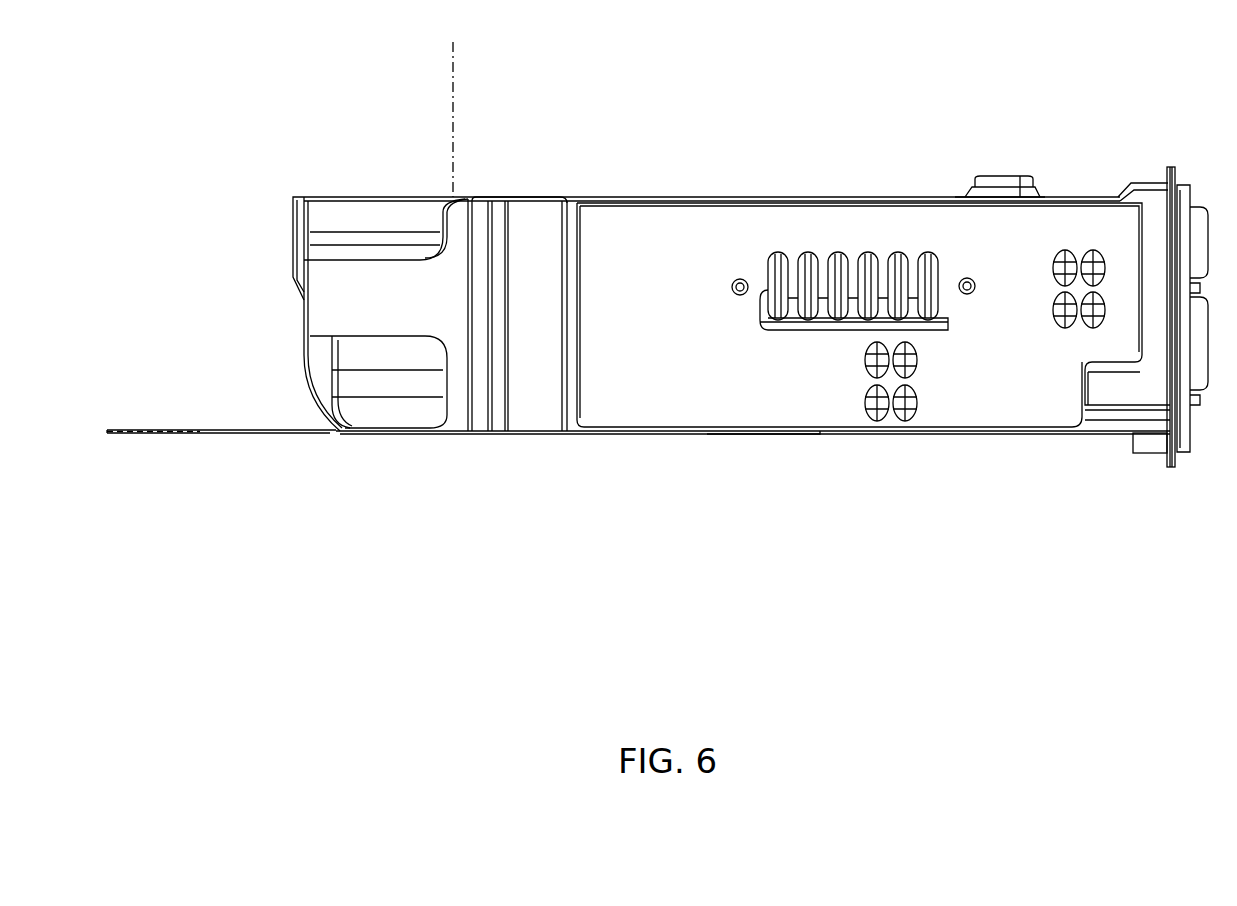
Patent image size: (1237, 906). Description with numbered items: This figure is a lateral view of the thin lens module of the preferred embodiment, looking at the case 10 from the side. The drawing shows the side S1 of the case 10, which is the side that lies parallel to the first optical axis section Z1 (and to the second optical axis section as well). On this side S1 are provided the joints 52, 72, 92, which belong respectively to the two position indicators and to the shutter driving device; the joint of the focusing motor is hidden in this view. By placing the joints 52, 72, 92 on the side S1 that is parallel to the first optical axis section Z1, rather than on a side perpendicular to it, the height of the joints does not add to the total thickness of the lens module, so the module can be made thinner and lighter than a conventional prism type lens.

The case 10 is at (1094, 197).
The side S1 is at (655, 232).
The first optical axis section Z1 is at (452, 60).
The joint 92 is at (773, 305).
The joint 72 is at (875, 410).
The joint 52 is at (1063, 320).